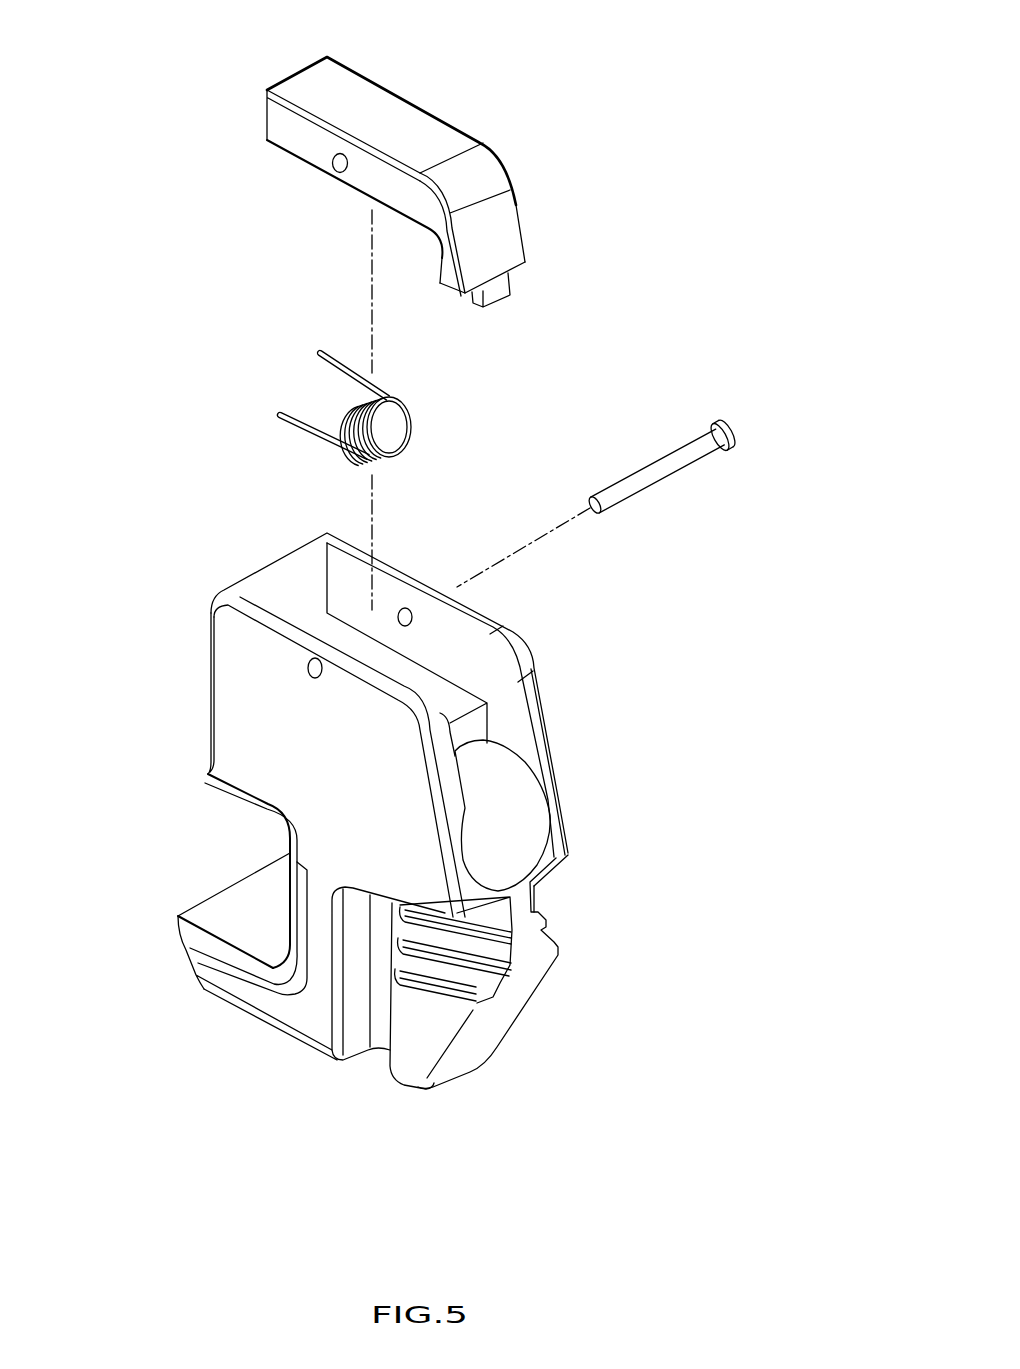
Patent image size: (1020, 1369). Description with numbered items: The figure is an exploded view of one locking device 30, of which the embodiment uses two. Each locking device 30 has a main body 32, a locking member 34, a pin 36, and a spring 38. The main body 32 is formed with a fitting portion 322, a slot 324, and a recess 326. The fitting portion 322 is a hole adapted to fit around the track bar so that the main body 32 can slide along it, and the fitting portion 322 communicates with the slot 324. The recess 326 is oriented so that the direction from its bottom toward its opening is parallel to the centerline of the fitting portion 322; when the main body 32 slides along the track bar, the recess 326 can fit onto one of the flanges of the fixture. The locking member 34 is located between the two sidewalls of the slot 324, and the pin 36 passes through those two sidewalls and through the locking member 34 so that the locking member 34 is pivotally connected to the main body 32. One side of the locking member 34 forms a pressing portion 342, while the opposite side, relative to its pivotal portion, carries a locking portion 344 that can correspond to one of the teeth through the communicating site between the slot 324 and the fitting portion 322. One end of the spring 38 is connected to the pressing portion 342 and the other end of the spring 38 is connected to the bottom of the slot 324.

The locking device 30 is at (658, 209).
The main body 32 is at (208, 683).
The fitting portion 322 is at (510, 850).
The slot 324 is at (440, 630).
The recess 326 is at (230, 903).
The locking member 34 is at (422, 99).
The pressing portion 342 is at (313, 83).
The locking portion 344 is at (498, 293).
The pin 36 is at (660, 463).
The spring 38 is at (297, 416).